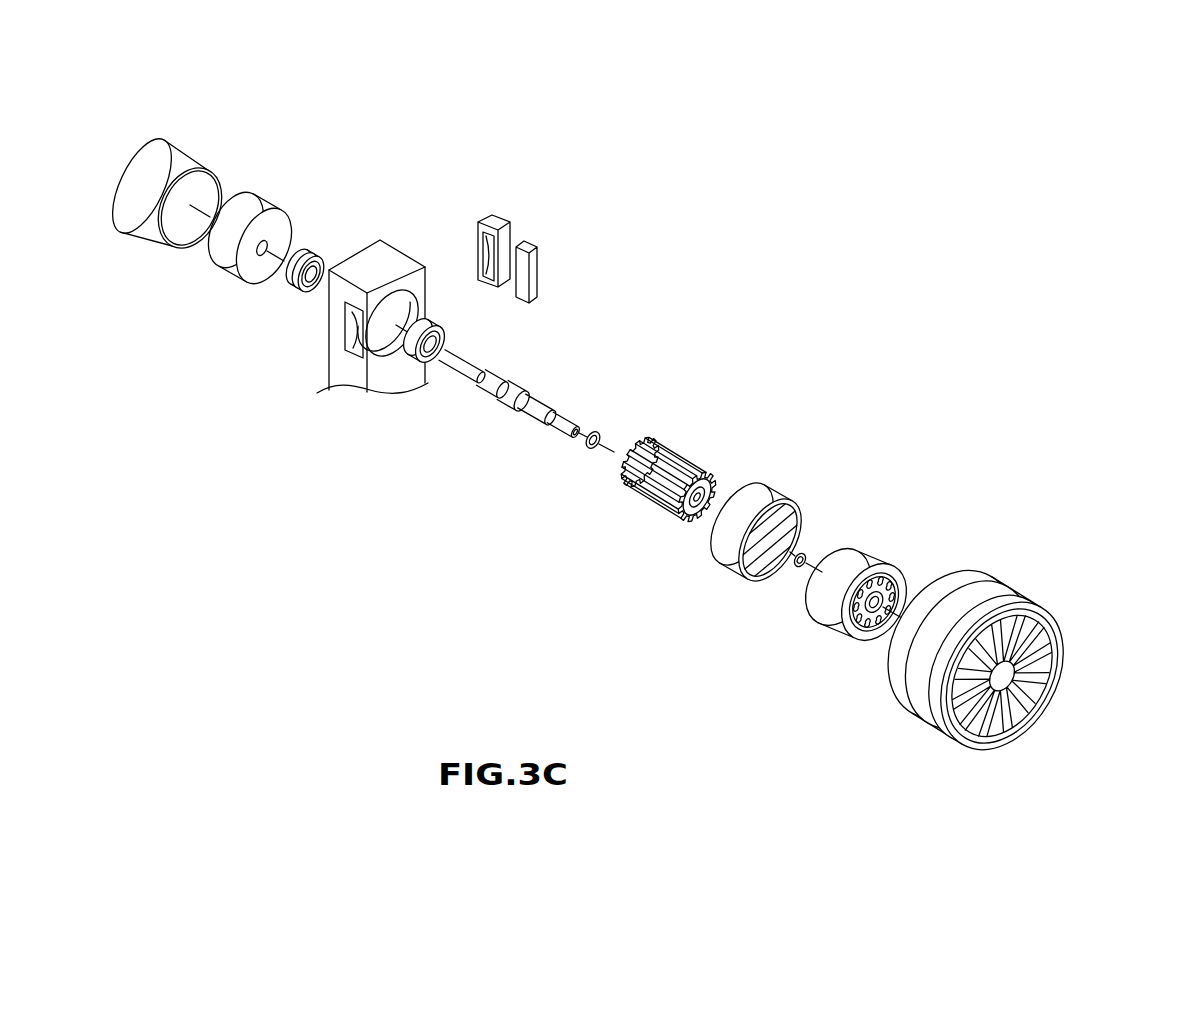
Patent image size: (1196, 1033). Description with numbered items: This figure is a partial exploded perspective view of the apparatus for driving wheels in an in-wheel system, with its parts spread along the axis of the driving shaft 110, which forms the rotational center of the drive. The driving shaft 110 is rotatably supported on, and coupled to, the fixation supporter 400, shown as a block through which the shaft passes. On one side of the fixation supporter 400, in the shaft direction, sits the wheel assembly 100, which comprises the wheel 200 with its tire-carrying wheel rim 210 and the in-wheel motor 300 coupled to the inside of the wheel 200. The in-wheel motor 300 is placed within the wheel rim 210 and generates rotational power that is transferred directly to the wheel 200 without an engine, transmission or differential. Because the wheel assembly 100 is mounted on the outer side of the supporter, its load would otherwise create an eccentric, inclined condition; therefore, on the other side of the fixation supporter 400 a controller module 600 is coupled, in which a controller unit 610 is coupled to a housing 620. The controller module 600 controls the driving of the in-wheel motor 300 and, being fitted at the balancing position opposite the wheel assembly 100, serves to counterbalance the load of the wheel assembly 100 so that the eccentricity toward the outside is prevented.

The wheel assembly 100 is at (1062, 600).
The driving shaft 110 is at (503, 397).
The wheel 200 is at (1007, 587).
The wheel rim 210 is at (970, 592).
The in-wheel motor 300 is at (877, 543).
The fixation supporter 400 is at (368, 262).
The controller module 600 is at (274, 122).
The controller unit 610 is at (260, 192).
The housing 620 is at (180, 158).